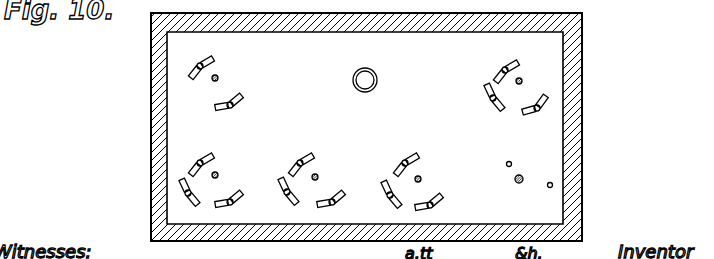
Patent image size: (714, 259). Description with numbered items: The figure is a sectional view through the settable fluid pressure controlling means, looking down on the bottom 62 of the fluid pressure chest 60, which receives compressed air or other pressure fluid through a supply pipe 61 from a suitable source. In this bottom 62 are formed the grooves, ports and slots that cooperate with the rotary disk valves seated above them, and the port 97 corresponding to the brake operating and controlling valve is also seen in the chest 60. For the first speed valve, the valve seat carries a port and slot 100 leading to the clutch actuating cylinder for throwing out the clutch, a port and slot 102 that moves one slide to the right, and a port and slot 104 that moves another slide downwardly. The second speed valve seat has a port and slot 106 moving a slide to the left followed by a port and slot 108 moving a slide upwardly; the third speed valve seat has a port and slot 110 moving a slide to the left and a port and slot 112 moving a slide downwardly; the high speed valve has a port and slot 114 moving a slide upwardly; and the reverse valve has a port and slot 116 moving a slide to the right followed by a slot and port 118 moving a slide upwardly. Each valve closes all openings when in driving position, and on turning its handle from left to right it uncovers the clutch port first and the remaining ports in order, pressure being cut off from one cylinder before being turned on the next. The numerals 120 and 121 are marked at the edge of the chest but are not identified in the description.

The fluid pressure chest 60 is at (580, 141).
The supply pipe 61 is at (366, 78).
The bottom of chest 62 is at (175, 137).
The port 97 is at (553, 183).
The port and slot 100 is at (201, 62).
The port and slot 102 is at (442, 197).
The port and slot 104 is at (386, 198).
The port and slot 106 is at (335, 191).
The port and slot 108 is at (284, 196).
The port and slot 110 is at (234, 197).
The port and slot 112 is at (188, 197).
The port and slot 114 is at (242, 101).
The port and slot 116 is at (541, 113).
The slot and port 118 is at (488, 97).
The cover 120 is at (511, 4).
The cover flange 121 is at (556, 4).